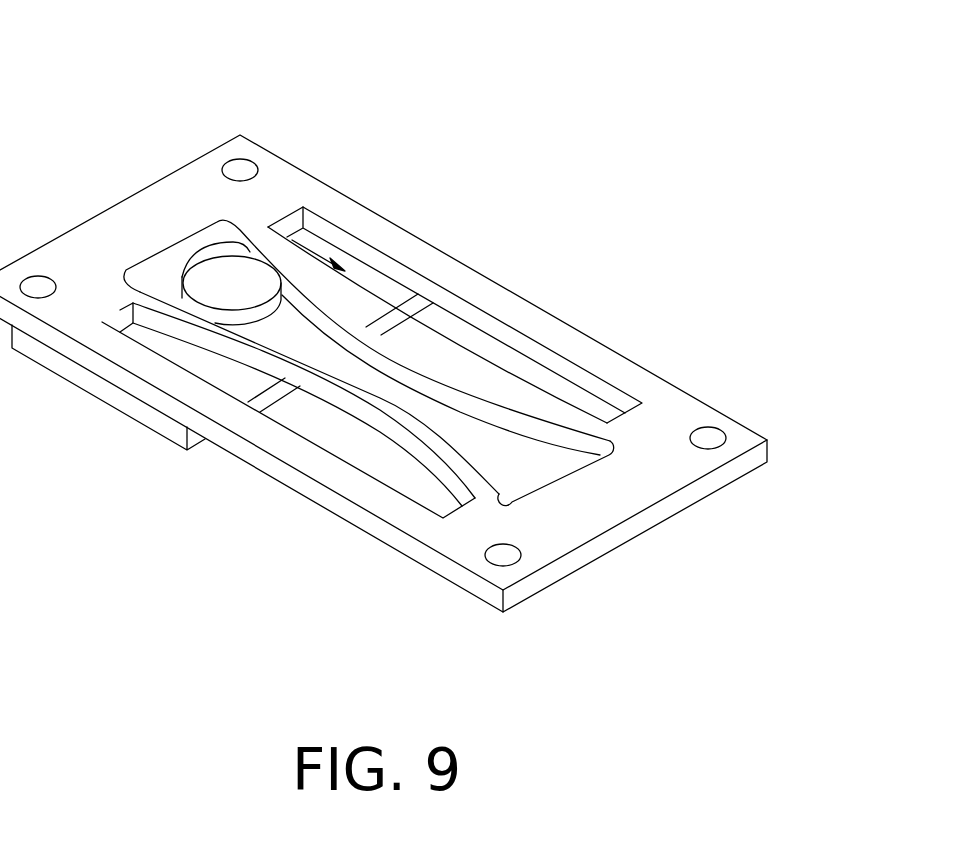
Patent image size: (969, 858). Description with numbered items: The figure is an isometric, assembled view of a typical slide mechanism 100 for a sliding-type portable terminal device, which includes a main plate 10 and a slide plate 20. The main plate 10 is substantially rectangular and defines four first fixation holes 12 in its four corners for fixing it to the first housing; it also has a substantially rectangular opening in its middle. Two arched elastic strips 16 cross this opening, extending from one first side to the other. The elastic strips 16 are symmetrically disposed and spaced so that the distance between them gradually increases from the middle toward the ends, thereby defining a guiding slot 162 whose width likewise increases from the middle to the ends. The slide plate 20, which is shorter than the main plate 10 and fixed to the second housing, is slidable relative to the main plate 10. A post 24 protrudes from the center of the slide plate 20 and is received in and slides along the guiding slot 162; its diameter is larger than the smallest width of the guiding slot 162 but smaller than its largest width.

The slide mechanism 100 is at (185, 68).
The main plate 10 is at (502, 307).
The first fixation holes 12 is at (708, 440).
The elastic strips 16 is at (358, 400).
The guiding slot 162 is at (527, 467).
The slide plate 20 is at (350, 283).
The post 24 is at (215, 280).